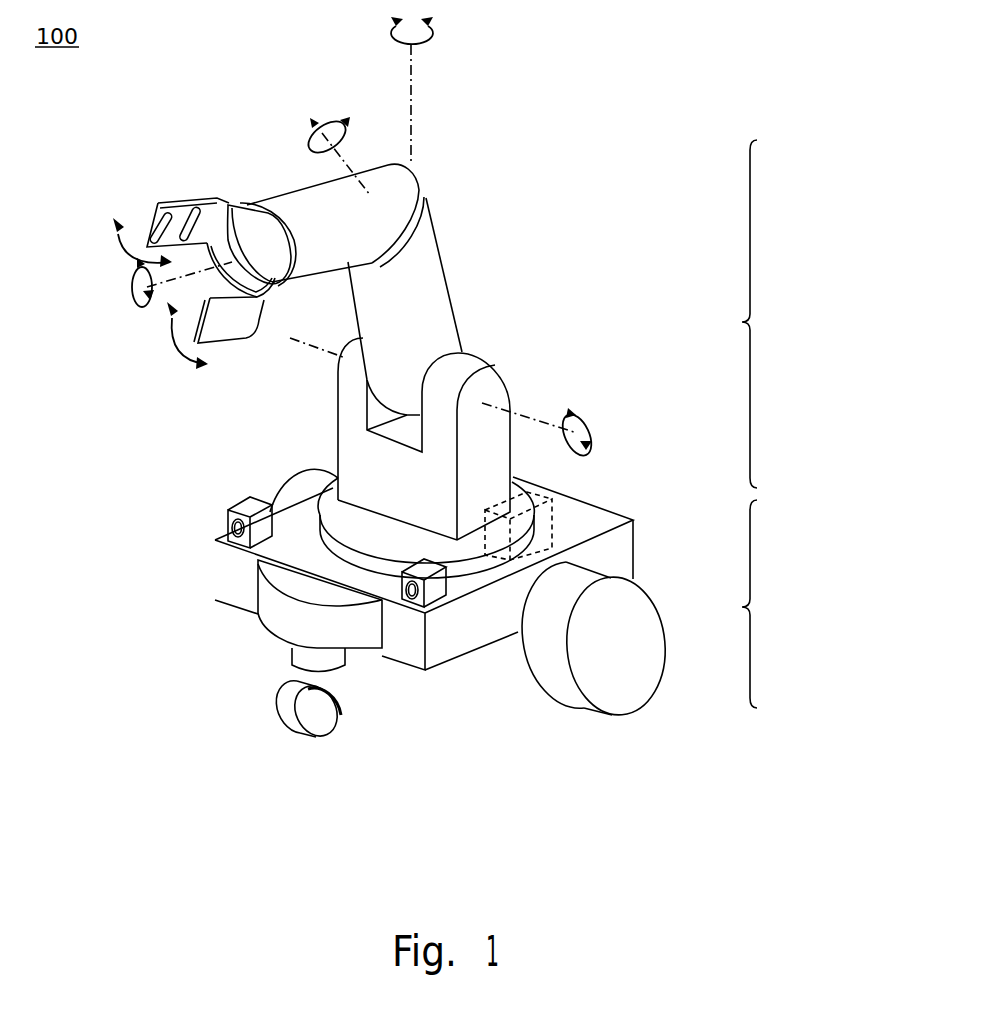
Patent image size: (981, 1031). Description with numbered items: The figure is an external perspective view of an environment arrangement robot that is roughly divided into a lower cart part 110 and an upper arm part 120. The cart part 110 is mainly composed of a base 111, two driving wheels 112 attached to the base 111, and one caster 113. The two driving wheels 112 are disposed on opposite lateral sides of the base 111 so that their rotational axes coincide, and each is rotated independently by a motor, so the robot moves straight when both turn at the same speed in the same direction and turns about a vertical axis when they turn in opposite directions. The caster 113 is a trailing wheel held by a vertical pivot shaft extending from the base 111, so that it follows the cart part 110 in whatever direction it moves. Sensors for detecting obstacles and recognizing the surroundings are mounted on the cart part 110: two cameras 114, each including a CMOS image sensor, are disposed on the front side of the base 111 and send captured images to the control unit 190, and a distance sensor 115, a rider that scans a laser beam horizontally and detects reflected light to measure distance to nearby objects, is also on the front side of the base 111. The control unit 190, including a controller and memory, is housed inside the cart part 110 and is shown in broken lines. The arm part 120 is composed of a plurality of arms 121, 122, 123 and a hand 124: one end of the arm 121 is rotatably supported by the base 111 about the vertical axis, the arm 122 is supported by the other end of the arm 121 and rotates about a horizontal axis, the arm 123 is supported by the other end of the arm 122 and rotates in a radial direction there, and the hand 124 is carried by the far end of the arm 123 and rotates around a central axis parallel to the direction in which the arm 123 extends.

The cart part 110 is at (775, 604).
The base 111 is at (445, 647).
The driving wheels 112 is at (300, 483).
The caster 113 is at (318, 722).
The cameras 114 is at (245, 505).
The distance sensor 115 is at (275, 620).
The arm part 120 is at (775, 314).
The arm 121 is at (497, 380).
The arm 122 is at (438, 281).
The arm 123 is at (295, 203).
The hand 124 is at (228, 332).
The control unit 190 is at (546, 498).